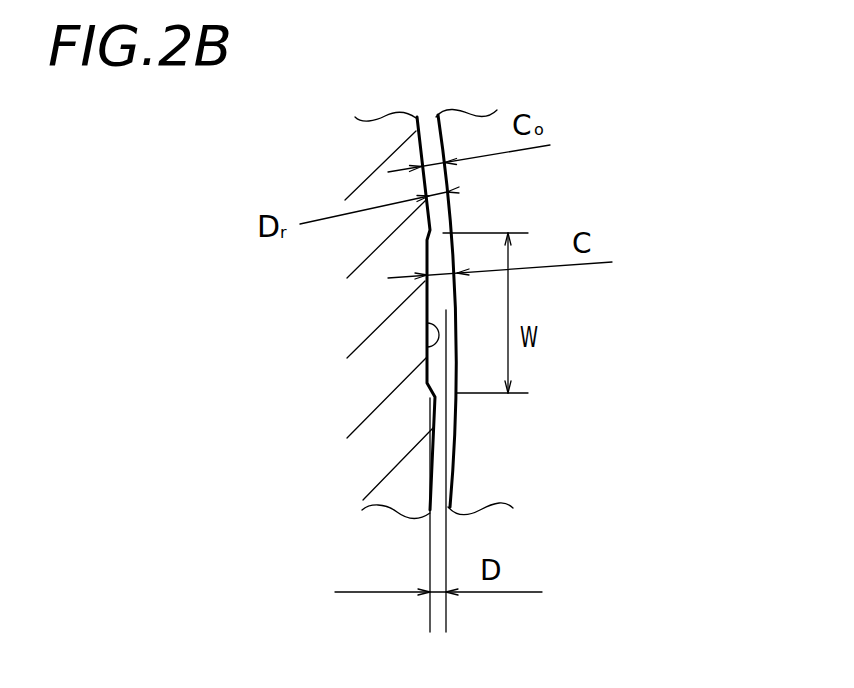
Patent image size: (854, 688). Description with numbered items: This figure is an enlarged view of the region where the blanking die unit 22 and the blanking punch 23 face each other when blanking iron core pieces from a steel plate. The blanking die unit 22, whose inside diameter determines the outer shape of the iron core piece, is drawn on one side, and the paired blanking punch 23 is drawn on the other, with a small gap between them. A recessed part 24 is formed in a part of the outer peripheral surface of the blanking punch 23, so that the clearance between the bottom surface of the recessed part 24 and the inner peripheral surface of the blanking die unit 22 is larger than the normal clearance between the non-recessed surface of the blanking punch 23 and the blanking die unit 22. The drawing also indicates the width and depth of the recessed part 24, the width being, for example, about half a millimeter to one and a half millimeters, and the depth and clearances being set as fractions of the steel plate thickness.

The blanking die unit 22 is at (468, 128).
The blanking punch 23 is at (383, 135).
The recessed part 24 is at (427, 347).